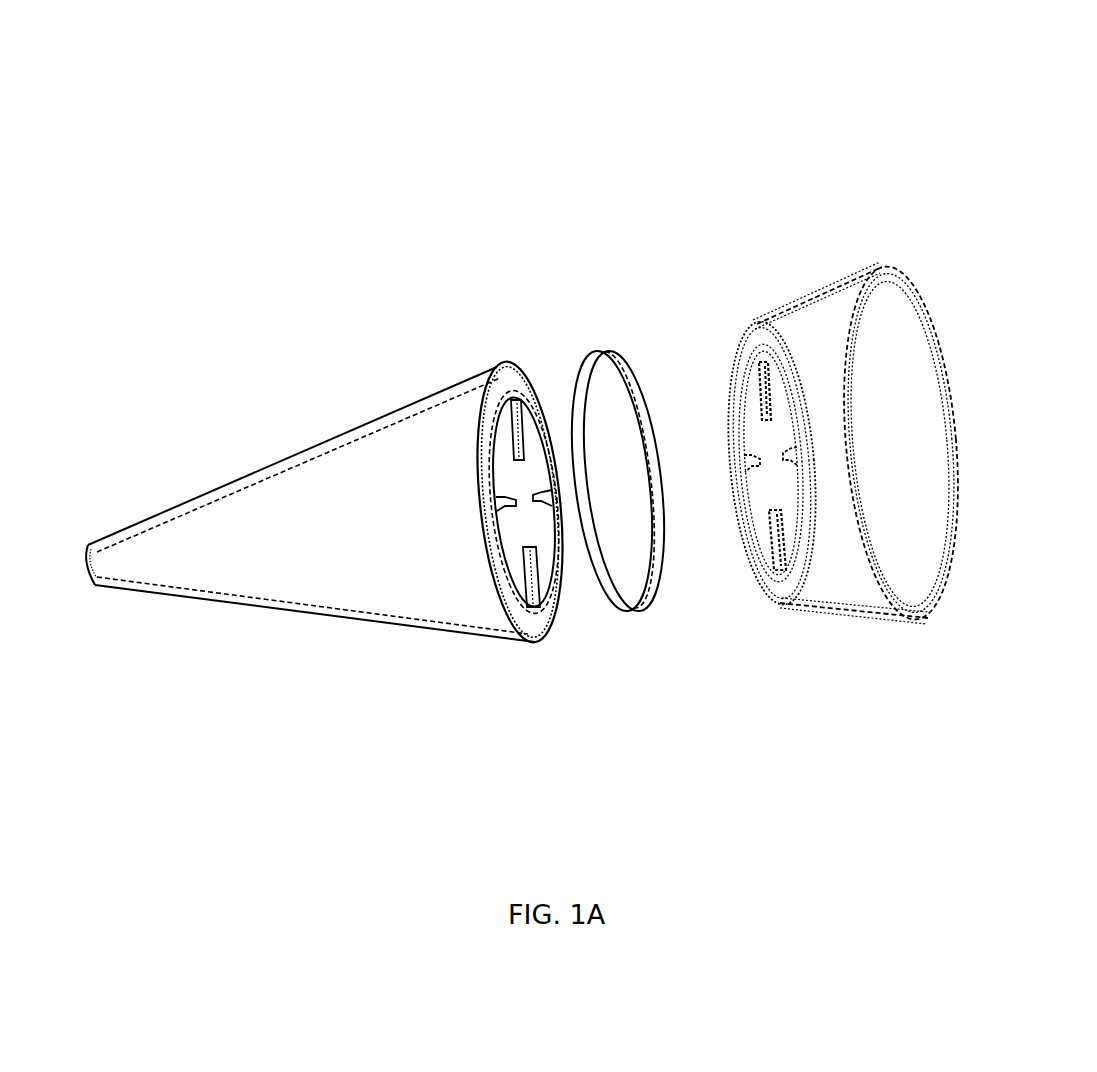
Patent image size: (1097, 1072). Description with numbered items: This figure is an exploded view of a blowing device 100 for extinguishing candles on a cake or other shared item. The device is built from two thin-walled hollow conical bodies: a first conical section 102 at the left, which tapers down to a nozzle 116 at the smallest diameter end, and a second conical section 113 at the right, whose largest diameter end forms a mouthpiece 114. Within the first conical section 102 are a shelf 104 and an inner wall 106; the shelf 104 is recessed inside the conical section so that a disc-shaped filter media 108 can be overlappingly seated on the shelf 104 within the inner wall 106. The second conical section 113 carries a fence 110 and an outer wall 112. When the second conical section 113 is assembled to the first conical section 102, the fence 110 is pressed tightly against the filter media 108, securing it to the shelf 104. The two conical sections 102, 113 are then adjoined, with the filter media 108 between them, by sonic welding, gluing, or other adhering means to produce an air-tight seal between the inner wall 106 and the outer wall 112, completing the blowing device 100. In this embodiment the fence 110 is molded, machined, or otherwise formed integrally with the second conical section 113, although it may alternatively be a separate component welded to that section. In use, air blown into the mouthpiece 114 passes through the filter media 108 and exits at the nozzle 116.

The blowing device 100 is at (777, 105).
The first conical section 102 is at (305, 590).
The shelf 104 is at (497, 368).
The inner wall 106 is at (533, 645).
The filter media 108 is at (608, 590).
The fence 110 is at (753, 335).
The outer wall 112 is at (775, 600).
The second conical section 113 is at (808, 590).
The mouthpiece 114 is at (890, 322).
The nozzle 116 is at (87, 573).